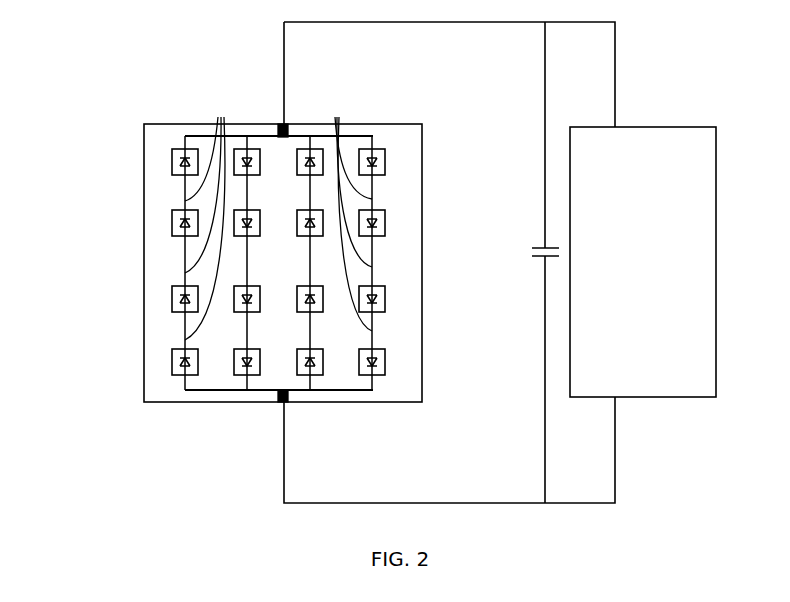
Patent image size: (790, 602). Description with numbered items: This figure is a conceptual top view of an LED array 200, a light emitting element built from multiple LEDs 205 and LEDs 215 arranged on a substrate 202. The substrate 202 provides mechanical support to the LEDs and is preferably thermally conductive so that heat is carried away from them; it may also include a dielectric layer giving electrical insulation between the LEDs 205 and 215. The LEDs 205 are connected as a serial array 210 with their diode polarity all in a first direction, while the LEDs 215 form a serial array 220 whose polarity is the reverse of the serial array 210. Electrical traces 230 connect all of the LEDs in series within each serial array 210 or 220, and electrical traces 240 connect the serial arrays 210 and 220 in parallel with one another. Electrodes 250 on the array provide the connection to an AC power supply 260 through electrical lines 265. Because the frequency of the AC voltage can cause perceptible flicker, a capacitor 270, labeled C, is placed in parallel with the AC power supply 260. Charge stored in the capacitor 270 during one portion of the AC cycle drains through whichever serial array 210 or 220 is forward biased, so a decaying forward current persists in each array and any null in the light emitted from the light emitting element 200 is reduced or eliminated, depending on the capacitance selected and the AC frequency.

The LED array 200 is at (167, 121).
The substrate 202 is at (400, 118).
The LEDs 205 is at (385, 162).
The serial array 210 is at (478, 153).
The LEDs 215 is at (172, 163).
The serial array 220 is at (88, 158).
The electrical traces 230 is at (278, 220).
The electrical traces 240 is at (267, 136).
The electrodes 250 is at (288, 124).
The AC power supply 260 is at (643, 262).
The electrical lines 265 is at (284, 27).
The capacitor 270 is at (531, 248).